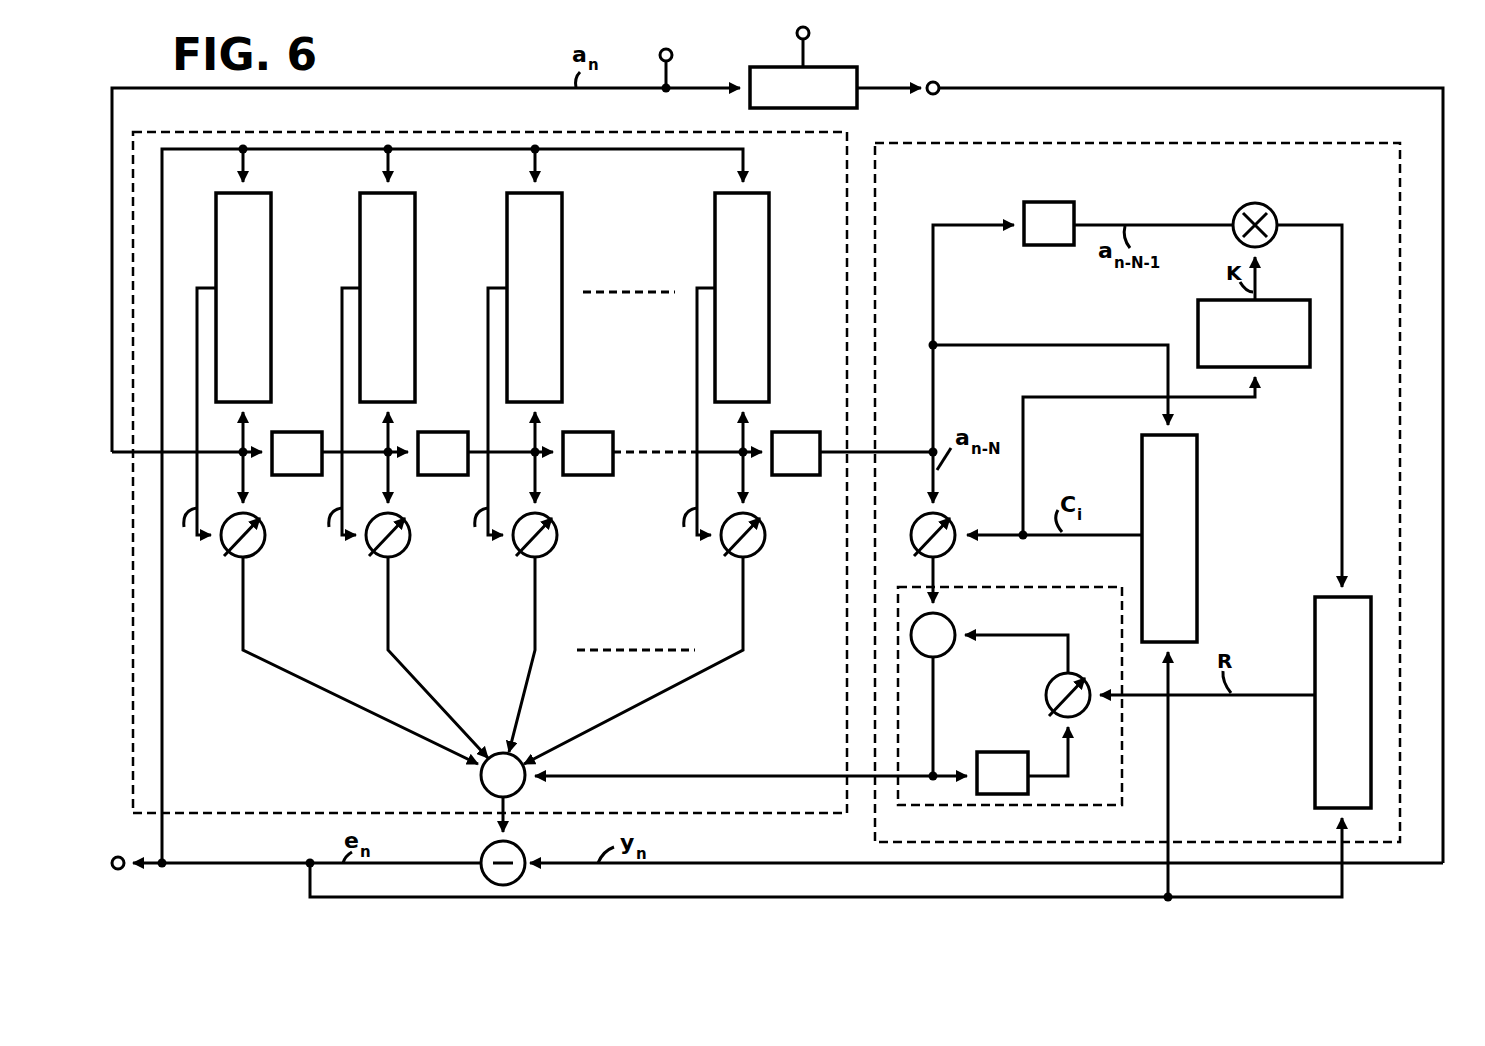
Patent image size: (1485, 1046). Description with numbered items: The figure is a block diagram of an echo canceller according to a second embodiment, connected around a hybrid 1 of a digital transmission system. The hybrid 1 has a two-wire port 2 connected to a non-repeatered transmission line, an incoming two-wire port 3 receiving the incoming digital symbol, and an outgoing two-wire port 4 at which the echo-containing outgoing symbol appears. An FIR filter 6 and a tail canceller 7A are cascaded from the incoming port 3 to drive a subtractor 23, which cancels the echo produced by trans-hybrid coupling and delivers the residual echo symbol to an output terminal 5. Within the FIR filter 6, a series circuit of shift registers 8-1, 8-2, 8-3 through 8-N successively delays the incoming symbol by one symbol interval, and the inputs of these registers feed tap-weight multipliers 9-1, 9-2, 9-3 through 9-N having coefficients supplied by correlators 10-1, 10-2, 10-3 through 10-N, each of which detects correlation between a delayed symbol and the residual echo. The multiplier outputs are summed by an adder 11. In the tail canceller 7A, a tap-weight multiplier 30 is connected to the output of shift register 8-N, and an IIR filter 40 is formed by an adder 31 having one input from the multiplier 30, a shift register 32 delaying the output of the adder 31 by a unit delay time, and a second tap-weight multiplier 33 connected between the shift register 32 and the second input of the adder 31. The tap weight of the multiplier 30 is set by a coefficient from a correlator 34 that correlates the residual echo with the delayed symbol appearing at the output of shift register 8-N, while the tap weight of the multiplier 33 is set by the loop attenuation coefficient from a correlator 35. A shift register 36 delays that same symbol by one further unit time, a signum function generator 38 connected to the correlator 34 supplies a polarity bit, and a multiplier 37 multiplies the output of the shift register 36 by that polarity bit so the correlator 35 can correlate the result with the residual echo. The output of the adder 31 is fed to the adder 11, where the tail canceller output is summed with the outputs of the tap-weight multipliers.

The hybrid 1 is at (841, 67).
The two-wire port 2 is at (797, 33).
The incoming two-wire port 3 is at (660, 55).
The outgoing two-wire port 4 is at (936, 82).
The output terminal 5 is at (117, 856).
The FIR filter 6 is at (490, 472).
The tail canceller 7A is at (1137, 492).
The shift register 8-1 is at (296, 432).
The shift register 8-2 is at (442, 432).
The shift register 8-3 is at (587, 432).
The shift register 8-N is at (799, 432).
The tap-weight multiplier 9-1 is at (250, 560).
The tap-weight multiplier 9-2 is at (395, 560).
The tap-weight multiplier 9-3 is at (543, 560).
The tap-weight multiplier 9-N is at (750, 560).
The correlator 10-1 is at (272, 232).
The correlator 10-2 is at (415, 232).
The correlator 10-3 is at (562, 232).
The correlator 10-N is at (769, 232).
The adder 11 is at (497, 752).
The subtractor 23 is at (485, 849).
The tap-weight multiplier 30 is at (912, 529).
The adder 31 is at (946, 655).
The shift register 32 is at (998, 752).
The second tap-weight multiplier 33 is at (1048, 683).
The correlator 34 is at (1197, 481).
The correlator 35 is at (1357, 597).
The shift register 36 is at (1037, 202).
The multiplier 37 is at (1236, 214).
The signum function generator 38 is at (1276, 300).
The IIR filter 40 is at (965, 560).